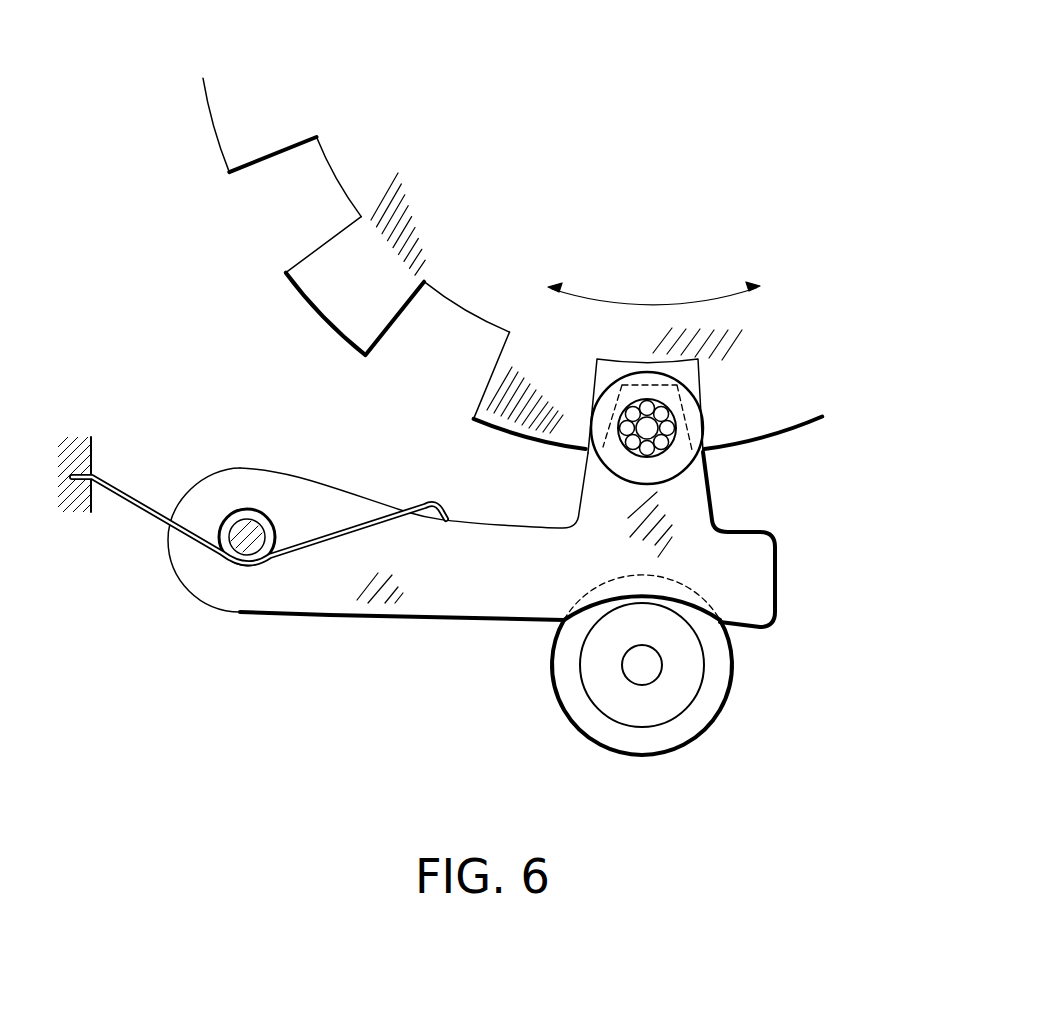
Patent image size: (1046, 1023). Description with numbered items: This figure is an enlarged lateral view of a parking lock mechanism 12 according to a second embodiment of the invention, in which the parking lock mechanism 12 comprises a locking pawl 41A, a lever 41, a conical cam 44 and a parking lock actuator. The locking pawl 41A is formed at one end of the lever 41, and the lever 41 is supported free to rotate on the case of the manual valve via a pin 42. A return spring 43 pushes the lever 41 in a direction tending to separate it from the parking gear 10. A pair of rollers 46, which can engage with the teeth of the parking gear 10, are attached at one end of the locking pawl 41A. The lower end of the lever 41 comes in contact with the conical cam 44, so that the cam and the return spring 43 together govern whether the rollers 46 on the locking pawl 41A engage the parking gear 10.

The parking gear 10 is at (342, 313).
The parking lock mechanism 12 is at (802, 470).
The lever 41 is at (445, 620).
The locking pawl 41A is at (690, 497).
The pin 42 is at (240, 547).
The return spring 43 is at (358, 523).
The conical cam 44 is at (725, 697).
The rollers 46 is at (690, 415).